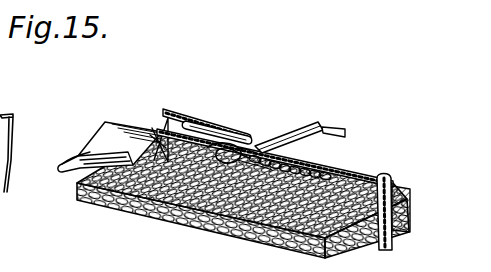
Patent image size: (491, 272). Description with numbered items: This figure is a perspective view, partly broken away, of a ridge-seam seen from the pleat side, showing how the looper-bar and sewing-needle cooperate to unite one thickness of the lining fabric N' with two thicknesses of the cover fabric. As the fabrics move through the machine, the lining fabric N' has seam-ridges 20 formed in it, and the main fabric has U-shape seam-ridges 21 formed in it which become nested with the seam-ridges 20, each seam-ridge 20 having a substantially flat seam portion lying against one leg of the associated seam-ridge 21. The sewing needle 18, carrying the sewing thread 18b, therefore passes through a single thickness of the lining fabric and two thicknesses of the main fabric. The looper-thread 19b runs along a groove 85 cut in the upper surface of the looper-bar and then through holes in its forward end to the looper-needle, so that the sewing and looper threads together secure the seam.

The looper-thread 19b is at (166, 112).
The groove 85 is at (207, 123).
The sewing needle 18 is at (292, 146).
The sewing thread 18b is at (346, 133).
The seam-ridge 20 is at (384, 173).
The U-shape seam-ridge 21 is at (394, 190).
The lining fabric N' is at (108, 142).